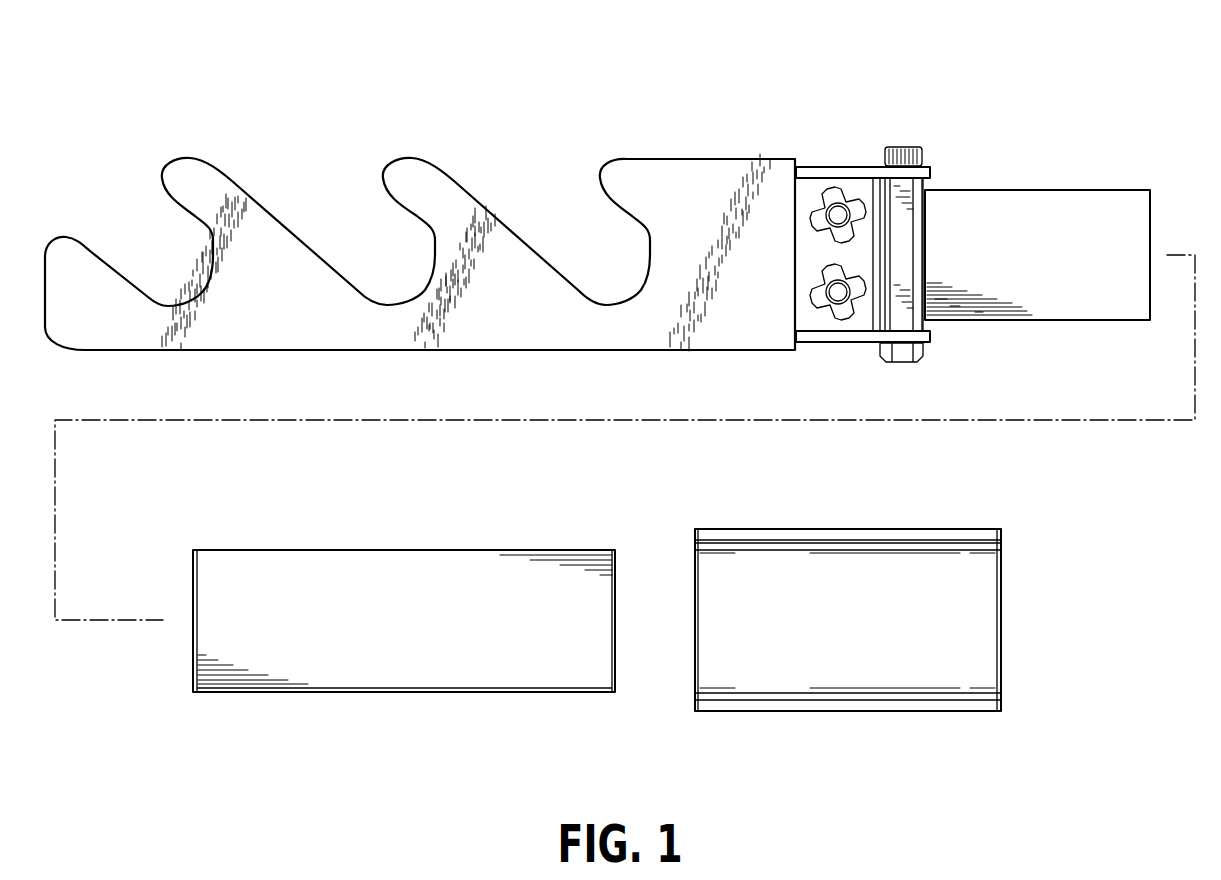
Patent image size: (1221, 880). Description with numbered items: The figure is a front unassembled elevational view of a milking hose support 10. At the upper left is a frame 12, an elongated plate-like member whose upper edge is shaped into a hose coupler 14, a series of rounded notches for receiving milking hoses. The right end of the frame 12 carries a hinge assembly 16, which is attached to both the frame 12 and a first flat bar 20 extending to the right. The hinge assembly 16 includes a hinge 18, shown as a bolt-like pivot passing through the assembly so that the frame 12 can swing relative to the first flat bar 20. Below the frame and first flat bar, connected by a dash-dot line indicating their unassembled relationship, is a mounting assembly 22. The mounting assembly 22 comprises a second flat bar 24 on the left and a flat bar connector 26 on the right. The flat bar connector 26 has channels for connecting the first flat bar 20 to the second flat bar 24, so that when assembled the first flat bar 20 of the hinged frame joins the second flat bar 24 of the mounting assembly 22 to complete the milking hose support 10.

The milking hose support 10 is at (1134, 89).
The frame 12 is at (93, 82).
The hose coupler 14 is at (353, 282).
The hinge assembly 16 is at (788, 125).
The hinge 18 is at (928, 153).
The first flat bar 20 is at (1035, 222).
The mounting assembly 22 is at (192, 743).
The second flat bar 24 is at (358, 635).
The flat bar connector 26 is at (890, 652).